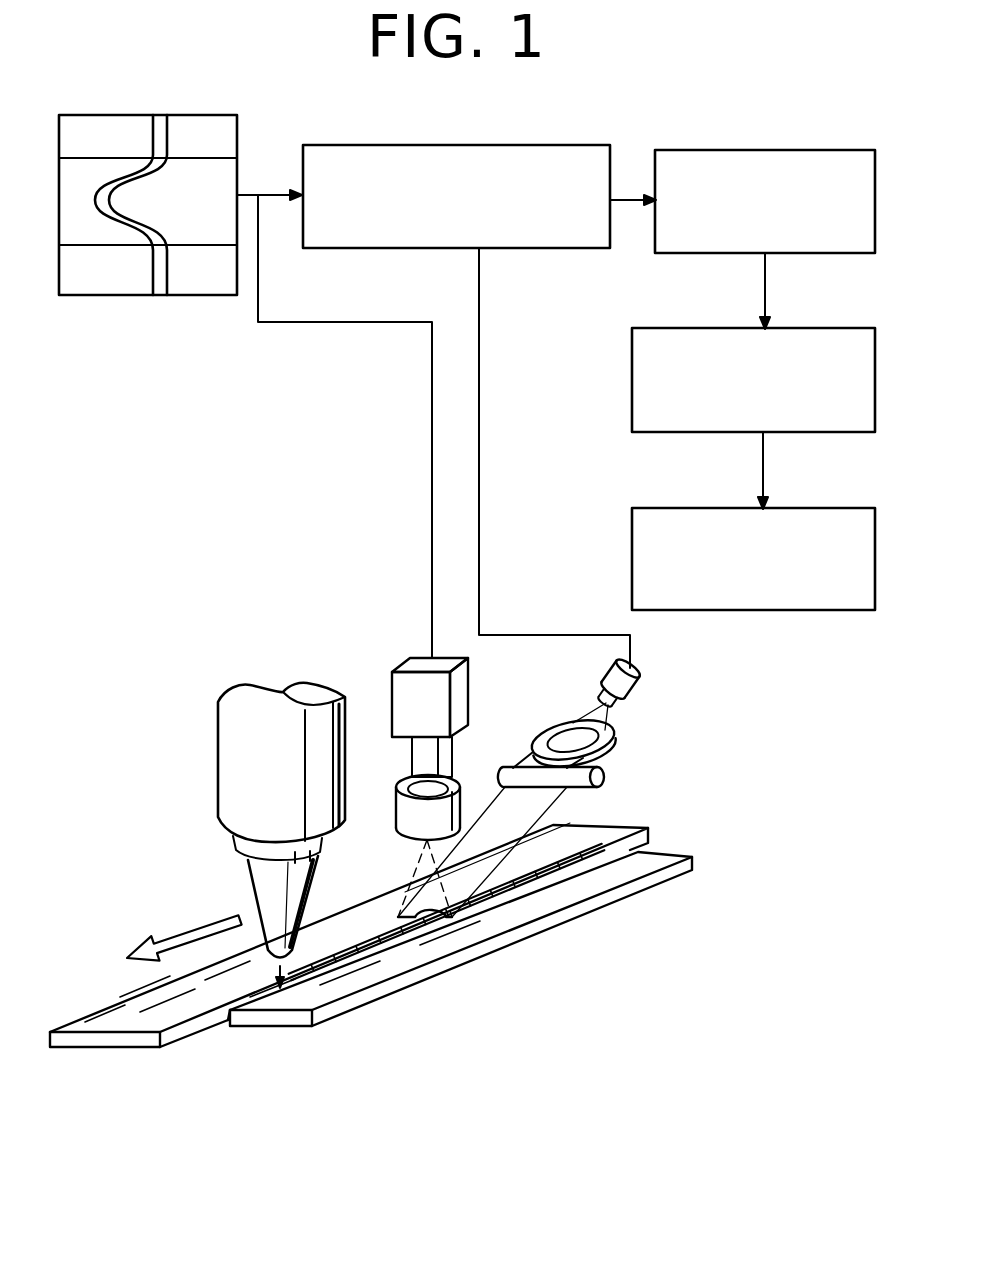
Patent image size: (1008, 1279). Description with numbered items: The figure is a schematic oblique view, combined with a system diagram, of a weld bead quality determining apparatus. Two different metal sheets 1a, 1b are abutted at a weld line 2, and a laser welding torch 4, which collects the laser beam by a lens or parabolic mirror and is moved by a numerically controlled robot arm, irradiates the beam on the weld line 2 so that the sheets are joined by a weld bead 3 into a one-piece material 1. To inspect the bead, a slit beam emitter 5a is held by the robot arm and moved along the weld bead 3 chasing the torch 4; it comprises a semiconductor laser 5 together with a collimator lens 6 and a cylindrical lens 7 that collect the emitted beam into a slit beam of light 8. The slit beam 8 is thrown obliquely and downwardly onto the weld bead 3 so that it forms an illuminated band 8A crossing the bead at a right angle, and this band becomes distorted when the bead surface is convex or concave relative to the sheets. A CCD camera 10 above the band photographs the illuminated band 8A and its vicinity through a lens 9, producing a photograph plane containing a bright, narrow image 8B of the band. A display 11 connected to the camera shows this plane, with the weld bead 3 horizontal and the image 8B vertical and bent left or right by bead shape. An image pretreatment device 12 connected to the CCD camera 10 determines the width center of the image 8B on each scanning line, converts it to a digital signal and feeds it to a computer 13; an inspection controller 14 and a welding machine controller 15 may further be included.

The one-piece material 1 is at (371, 976).
The metal sheet 1a is at (113, 1040).
The metal sheet 1b is at (383, 972).
The weld line 2 is at (225, 1010).
The weld bead 3 is at (290, 980).
The laser welding torch 4 is at (218, 742).
The semiconductor laser 5 is at (637, 672).
The slit beam emitter 5a is at (653, 751).
The collimator lens 6 is at (617, 733).
The cylindrical lens 7 is at (611, 804).
The slit beam of light 8 is at (470, 870).
The illuminated band 8A is at (425, 918).
The image of the illuminated band 8B is at (158, 265).
The lens 9 is at (398, 808).
The CCD camera 10 is at (410, 658).
The display 11 is at (200, 115).
The image pretreatment device 12 is at (438, 147).
The computer 13 is at (720, 151).
The inspection controller 14 is at (632, 403).
The welding machine controller 15 is at (632, 568).